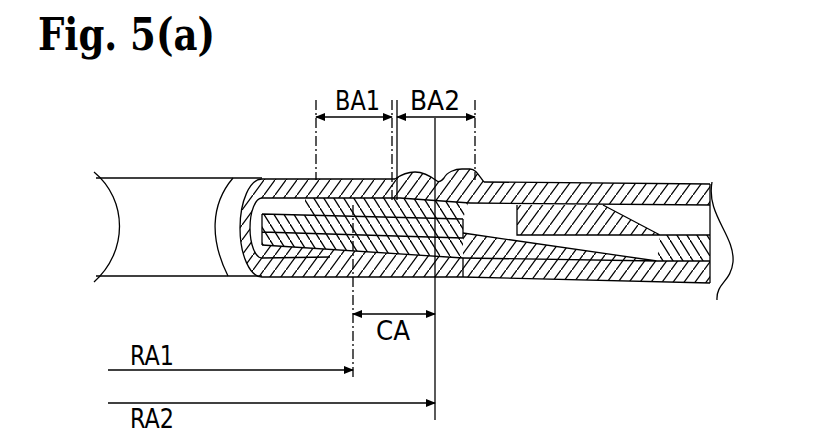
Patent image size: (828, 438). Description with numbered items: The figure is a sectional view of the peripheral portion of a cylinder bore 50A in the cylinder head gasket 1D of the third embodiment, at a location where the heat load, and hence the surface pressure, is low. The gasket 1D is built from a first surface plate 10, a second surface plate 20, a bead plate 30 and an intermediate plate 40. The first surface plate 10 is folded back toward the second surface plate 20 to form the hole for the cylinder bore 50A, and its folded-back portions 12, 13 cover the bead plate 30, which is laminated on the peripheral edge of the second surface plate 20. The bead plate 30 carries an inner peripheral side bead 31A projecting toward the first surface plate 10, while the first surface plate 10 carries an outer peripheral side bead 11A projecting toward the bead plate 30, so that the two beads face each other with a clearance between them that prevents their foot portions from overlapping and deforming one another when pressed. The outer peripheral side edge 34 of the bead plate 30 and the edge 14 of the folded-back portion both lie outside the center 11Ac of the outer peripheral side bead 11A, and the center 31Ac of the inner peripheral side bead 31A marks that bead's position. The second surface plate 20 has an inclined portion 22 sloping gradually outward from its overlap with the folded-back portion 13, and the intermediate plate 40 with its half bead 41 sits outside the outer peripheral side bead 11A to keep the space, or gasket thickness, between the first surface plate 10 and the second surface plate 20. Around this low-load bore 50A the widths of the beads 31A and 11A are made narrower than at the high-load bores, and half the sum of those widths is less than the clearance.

The cylinder head gasket 1D is at (745, 165).
The first surface plate 10 is at (632, 185).
The outer peripheral side bead 11A is at (470, 170).
The center of the outer peripheral side bead 11Ac is at (436, 368).
The folded-back portion 12 is at (228, 278).
The folded-back portion 13 is at (307, 280).
The edge of the folded-back portion 14 is at (470, 275).
The second surface plate 20 is at (636, 277).
The inclined portion 22 is at (537, 267).
The bead plate 30 is at (250, 181).
The inner peripheral side bead 31A is at (302, 196).
The center of the inner peripheral side bead 31Ac is at (363, 350).
The outer peripheral side edge 34 is at (498, 265).
The intermediate plate 40 is at (722, 268).
The half bead 41 is at (658, 193).
The cylinder bore 50A is at (197, 253).